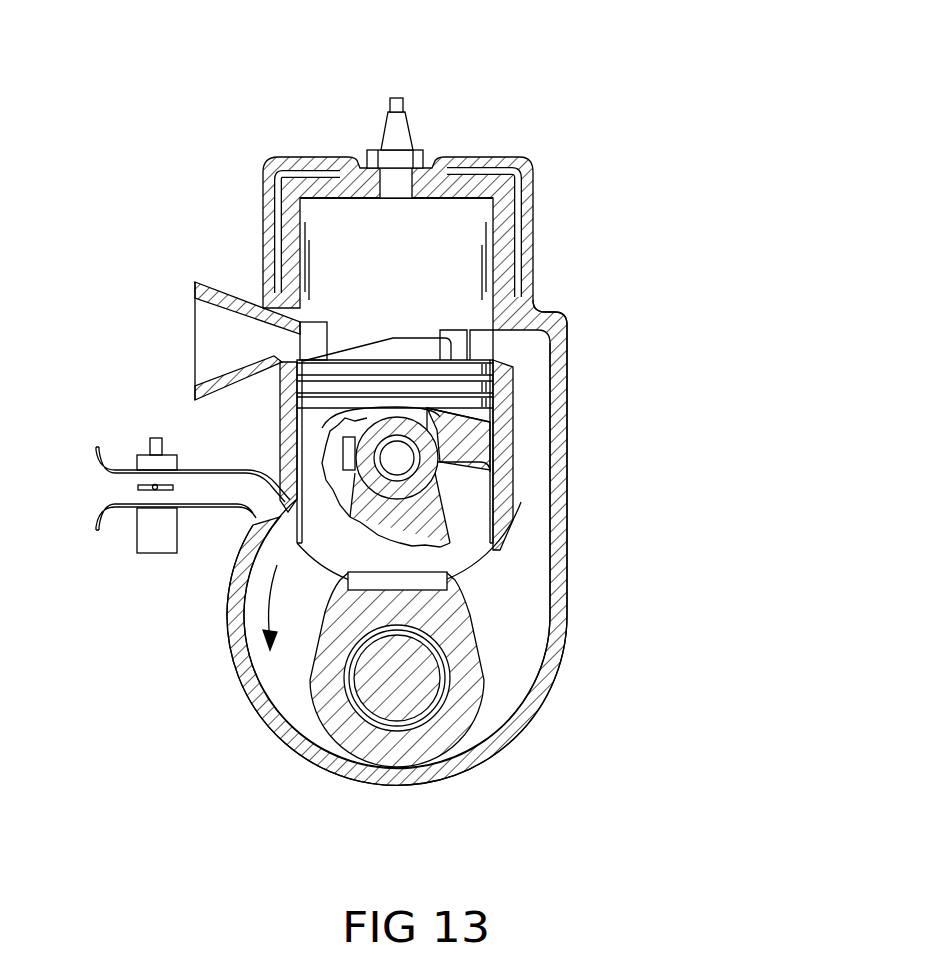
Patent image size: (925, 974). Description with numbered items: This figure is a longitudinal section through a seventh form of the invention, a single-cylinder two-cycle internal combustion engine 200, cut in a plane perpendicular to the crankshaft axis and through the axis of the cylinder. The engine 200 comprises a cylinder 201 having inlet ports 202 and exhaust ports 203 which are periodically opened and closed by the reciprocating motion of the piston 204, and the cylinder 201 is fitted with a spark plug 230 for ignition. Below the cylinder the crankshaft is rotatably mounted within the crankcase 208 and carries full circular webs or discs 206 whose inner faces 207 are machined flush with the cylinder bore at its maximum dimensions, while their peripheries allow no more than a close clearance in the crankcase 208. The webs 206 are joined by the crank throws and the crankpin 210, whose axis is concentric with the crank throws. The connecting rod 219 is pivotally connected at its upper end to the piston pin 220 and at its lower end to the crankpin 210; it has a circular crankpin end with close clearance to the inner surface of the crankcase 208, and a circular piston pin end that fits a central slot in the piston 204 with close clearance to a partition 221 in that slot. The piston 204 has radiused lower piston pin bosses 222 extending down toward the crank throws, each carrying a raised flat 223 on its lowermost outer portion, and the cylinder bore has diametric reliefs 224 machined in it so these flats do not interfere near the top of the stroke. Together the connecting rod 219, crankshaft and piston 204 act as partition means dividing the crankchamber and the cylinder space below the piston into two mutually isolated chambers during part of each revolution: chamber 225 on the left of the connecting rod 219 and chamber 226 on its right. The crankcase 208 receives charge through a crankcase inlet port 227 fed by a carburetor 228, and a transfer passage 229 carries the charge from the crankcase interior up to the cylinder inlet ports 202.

The internal combustion engine 200 is at (419, 455).
The cylinder 201 is at (533, 210).
The inlet ports 202 is at (537, 312).
The exhaust ports 203 is at (313, 332).
The piston 204 is at (310, 412).
The crankshaft webs 206 is at (505, 712).
The inner faces of the webs 207 is at (518, 690).
The crankcase 208 is at (396, 564).
The crankpin 210 is at (423, 703).
The connecting rod 219 is at (423, 753).
The piston pin 220 is at (415, 468).
The partition 221 is at (440, 440).
The lower piston pin bosses 222 is at (440, 560).
The raised flat 223 is at (437, 577).
The diametric reliefs 224 is at (347, 443).
The chamber 225 is at (263, 652).
The chamber 226 is at (528, 630).
The crankcase inlet port 227 is at (273, 510).
The carburetor 228 is at (145, 535).
The transfer passage 229 is at (538, 500).
The spark plug 230 is at (406, 132).